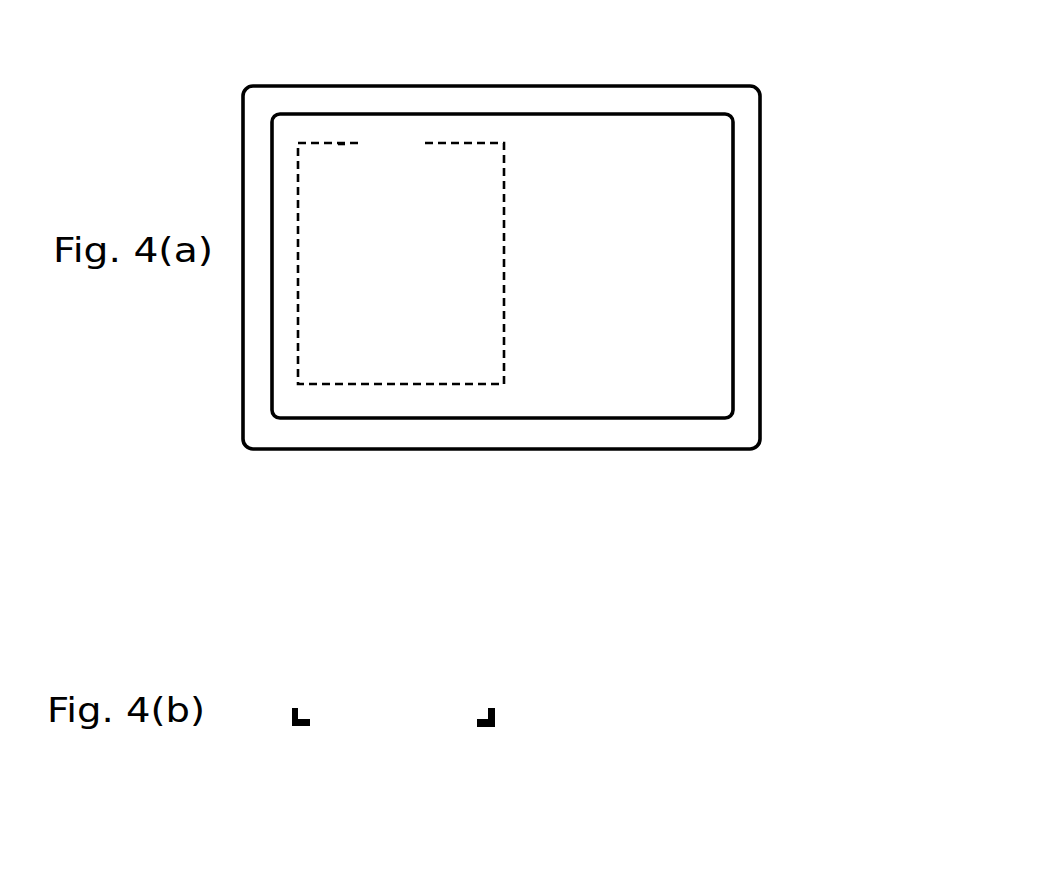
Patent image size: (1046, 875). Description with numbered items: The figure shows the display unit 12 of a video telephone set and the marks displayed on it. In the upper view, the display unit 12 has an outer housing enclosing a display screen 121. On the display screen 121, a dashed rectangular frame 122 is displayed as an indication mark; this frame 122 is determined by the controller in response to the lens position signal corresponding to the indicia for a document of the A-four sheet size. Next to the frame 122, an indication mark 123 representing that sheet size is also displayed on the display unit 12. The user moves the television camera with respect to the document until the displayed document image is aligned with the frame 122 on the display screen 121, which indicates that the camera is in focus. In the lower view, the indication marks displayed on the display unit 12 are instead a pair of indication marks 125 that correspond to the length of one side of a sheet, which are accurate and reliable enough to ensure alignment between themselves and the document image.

In FIG. 4A, the display unit 12 is at (588, 86).
In FIG. 4A, the display screen 121 is at (678, 418).
In FIG. 4A, the frame 122 is at (415, 385).
In FIG. 4A, the indication mark 123 is at (400, 118).
In FIG. 4B, the indication marks 125 is at (298, 728).